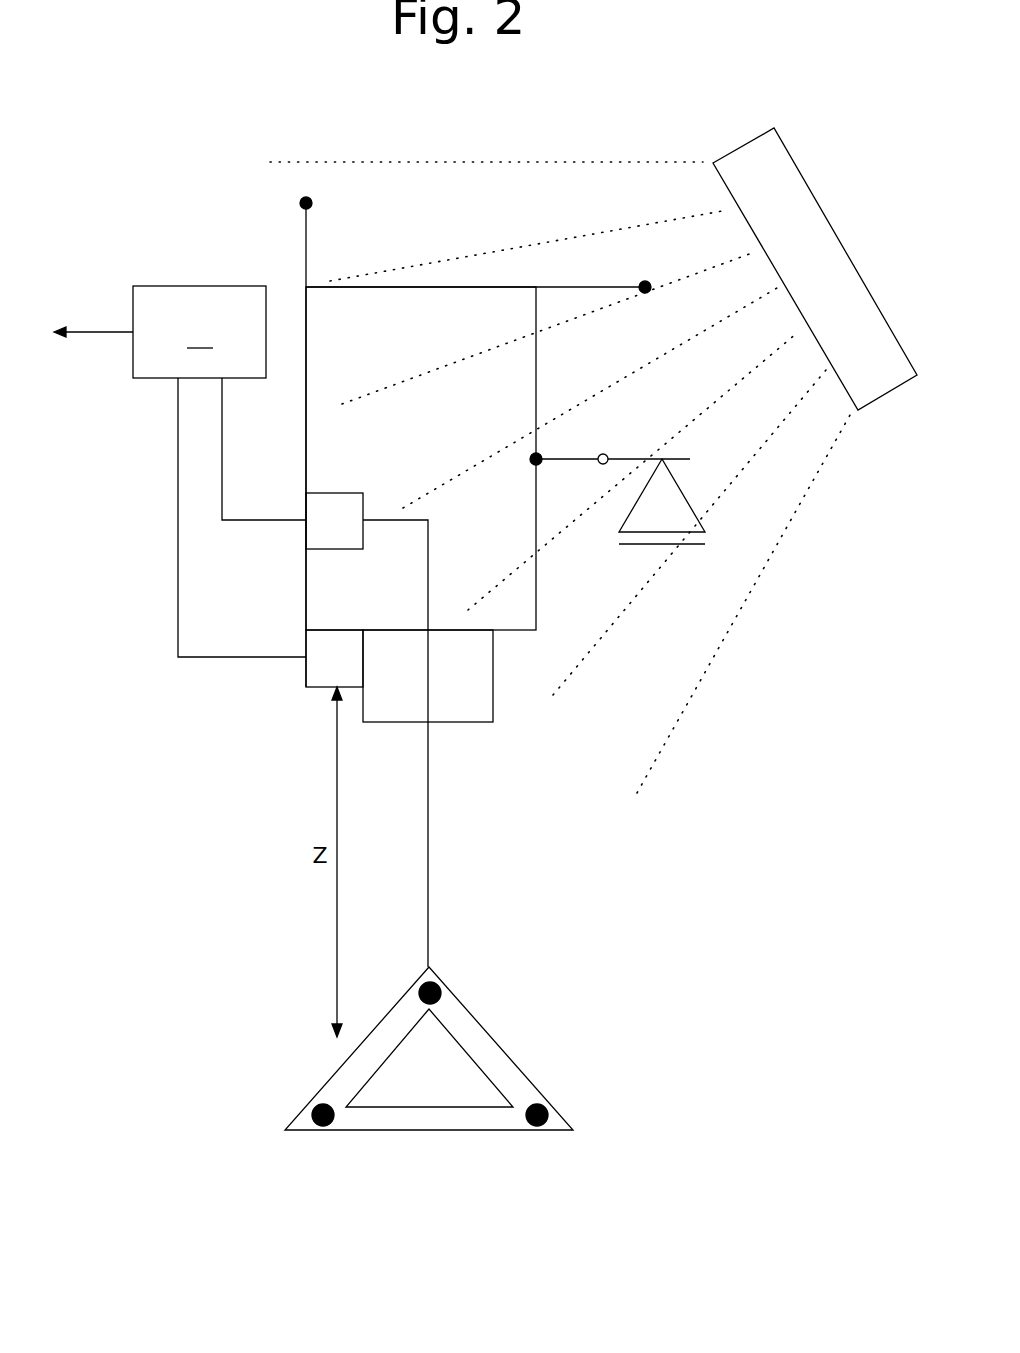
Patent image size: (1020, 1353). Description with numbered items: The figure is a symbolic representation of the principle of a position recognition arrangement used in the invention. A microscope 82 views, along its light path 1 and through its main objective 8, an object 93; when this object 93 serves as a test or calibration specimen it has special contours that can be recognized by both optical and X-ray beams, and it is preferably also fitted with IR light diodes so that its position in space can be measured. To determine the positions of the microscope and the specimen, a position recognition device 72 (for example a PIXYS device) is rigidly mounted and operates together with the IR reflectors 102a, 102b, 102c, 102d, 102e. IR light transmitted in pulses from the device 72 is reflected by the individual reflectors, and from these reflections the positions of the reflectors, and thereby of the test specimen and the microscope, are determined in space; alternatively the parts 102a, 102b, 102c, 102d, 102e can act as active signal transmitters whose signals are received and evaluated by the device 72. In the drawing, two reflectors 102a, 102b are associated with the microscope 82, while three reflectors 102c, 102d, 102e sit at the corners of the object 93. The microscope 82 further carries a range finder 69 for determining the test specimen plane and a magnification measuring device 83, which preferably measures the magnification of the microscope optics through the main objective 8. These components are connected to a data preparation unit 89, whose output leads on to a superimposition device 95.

The light path 1 is at (430, 920).
The main objective 8 is at (457, 718).
The range finder 69 is at (313, 670).
The position recognition device 72 is at (759, 168).
The microscope 82 is at (513, 632).
The magnification measuring device 83 is at (311, 540).
The data preparation unit 89 is at (219, 471).
The object 93 is at (387, 1120).
The superimposition device 95 is at (93, 347).
The IR reflector 102a is at (310, 199).
The IR reflector 102b is at (641, 283).
The IR reflector 102c is at (440, 983).
The IR reflector 102d is at (548, 1107).
The IR reflector 102e is at (313, 1107).